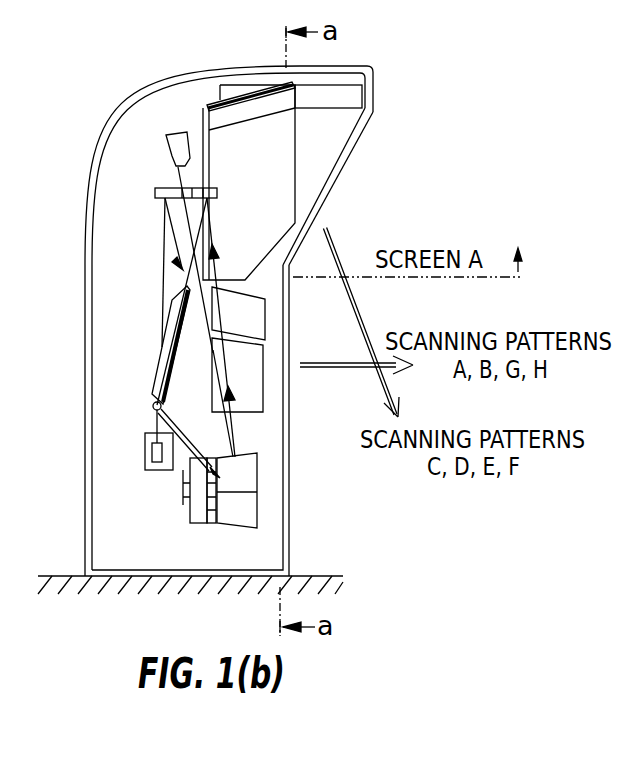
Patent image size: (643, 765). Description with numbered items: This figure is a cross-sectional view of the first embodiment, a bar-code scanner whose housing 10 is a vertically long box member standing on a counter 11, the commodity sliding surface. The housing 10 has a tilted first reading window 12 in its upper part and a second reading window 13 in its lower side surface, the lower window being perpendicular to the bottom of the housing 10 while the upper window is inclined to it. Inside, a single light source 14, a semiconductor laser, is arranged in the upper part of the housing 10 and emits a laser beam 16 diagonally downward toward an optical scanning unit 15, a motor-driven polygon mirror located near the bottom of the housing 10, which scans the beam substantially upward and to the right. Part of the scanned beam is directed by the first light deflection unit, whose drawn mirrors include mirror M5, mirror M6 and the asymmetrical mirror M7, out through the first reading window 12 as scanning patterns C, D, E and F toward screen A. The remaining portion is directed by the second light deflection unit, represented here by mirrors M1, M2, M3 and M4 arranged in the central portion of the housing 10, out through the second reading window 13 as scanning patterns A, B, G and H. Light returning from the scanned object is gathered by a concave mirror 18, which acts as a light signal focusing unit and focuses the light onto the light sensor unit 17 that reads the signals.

The housing 10 is at (197, 72).
The counter 11 is at (296, 576).
The first reading window 12 is at (358, 150).
The second reading window 13 is at (291, 458).
The light source 14 is at (166, 148).
The optical scanning unit 15 is at (258, 510).
The laser beam 16 is at (188, 222).
The light sensor unit 17 is at (153, 457).
The concave mirror 18 is at (155, 193).
The mirror M1 is at (262, 388).
The mirror M2 is at (258, 314).
The mirror M3 is at (172, 327).
The mirror M4 is at (153, 417).
The mirror M5 is at (295, 183).
The mirror M6 is at (353, 100).
The mirror M7 is at (203, 118).